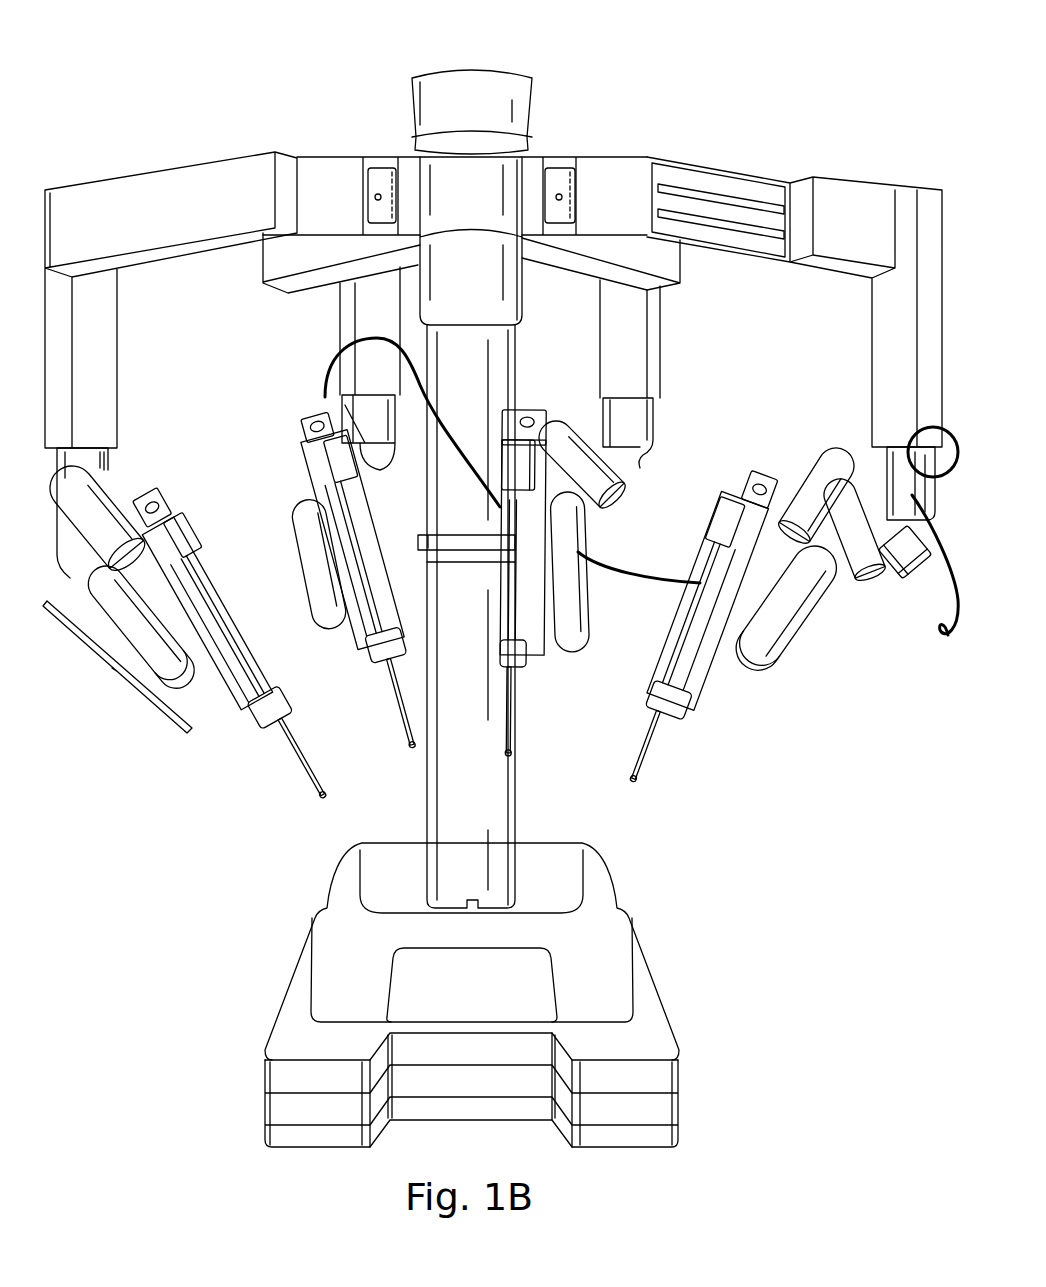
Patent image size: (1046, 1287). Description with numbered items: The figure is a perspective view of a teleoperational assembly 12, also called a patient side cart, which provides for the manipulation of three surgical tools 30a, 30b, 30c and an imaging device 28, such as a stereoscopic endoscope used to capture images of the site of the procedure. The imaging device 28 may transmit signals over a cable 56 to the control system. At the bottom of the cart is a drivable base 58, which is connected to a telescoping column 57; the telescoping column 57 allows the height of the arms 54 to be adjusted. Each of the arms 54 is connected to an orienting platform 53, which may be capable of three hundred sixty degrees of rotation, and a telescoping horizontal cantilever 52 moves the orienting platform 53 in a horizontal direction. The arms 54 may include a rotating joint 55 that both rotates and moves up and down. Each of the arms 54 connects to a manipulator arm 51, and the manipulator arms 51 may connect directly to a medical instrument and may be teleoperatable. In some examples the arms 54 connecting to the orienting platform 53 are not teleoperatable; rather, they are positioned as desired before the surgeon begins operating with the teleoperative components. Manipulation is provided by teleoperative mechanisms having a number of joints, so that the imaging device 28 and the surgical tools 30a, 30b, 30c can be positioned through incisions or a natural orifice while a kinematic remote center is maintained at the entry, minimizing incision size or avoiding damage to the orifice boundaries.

The teleoperational assembly 12 is at (362, 311).
The imaging device 28 is at (318, 406).
The surgical tool 30a is at (223, 604).
The surgical tool 30b is at (517, 708).
The surgical tool 30c is at (683, 640).
The manipulator arm 51 is at (117, 667).
The telescoping horizontal cantilever 52 is at (487, 68).
The orienting platform 53 is at (457, 175).
The arm 54 is at (897, 158).
The rotating joint 55 is at (877, 463).
The cable 56 is at (953, 590).
The telescoping column 57 is at (437, 794).
The drivable base 58 is at (657, 1035).